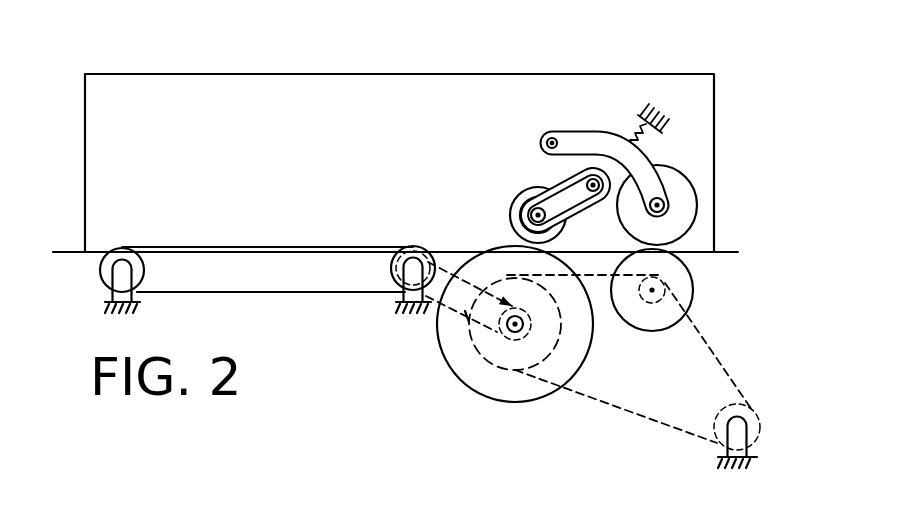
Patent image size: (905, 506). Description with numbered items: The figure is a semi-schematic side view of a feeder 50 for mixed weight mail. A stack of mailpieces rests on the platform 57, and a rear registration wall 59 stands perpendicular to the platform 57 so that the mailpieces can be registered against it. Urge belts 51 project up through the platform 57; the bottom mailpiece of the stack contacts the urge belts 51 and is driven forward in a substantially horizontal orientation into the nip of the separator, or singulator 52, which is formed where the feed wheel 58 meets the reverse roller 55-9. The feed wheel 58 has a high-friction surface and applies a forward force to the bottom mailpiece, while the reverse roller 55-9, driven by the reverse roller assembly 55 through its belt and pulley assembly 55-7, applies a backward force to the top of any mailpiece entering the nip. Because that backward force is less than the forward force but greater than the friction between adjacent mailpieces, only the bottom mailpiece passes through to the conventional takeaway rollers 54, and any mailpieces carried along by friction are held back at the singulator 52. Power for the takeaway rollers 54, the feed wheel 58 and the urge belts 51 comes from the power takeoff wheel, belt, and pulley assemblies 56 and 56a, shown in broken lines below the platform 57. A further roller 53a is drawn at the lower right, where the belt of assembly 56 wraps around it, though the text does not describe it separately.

The feeder 50 is at (430, 62).
The urge belts 51 is at (118, 212).
The separator (singulator) 52 is at (448, 185).
The idler roller 53a is at (757, 363).
The takeaway rollers 54 is at (725, 203).
The reverse roller assembly 55 is at (507, 180).
The second belt and pulley assembly 55-7 is at (537, 163).
The reverse roller 55-9 is at (511, 205).
The power takeoff wheel, belt, and pulley assembly 56 is at (650, 425).
The power takeoff wheel, belt, and pulley assembly 56a is at (447, 355).
The platform 57 is at (237, 247).
The feed wheel 58 is at (512, 402).
The rear registration wall 59 is at (219, 90).